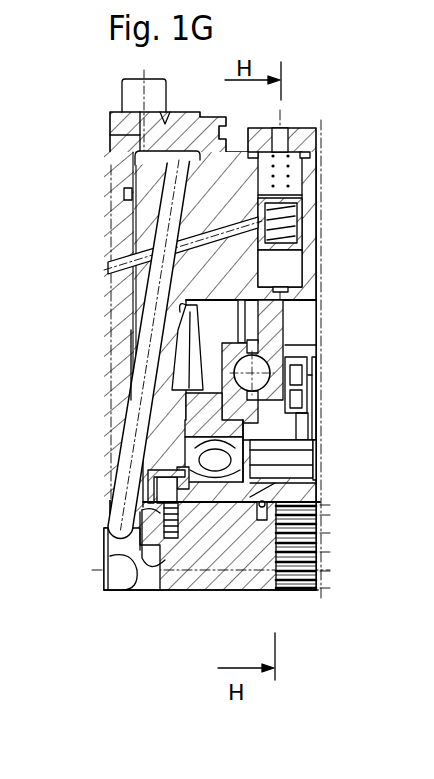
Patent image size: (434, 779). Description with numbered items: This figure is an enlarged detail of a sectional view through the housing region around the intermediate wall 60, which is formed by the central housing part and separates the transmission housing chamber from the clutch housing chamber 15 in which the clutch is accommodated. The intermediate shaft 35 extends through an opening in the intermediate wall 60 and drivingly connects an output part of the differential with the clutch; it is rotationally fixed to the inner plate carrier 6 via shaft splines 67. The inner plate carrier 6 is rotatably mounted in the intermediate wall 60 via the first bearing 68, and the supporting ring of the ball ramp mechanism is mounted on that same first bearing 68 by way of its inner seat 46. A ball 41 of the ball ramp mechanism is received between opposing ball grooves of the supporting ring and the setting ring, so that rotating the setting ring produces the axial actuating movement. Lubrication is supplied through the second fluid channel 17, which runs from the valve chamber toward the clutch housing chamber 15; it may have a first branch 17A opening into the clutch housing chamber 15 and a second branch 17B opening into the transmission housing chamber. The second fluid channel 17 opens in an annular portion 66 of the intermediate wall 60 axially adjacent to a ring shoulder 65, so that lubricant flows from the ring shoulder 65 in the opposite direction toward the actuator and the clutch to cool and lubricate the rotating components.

The inner plate carrier 6 is at (308, 488).
The clutch housing chamber 15 is at (152, 570).
The second fluid channel 17 is at (148, 231).
The first branch 17A is at (136, 398).
The second branch 17B is at (146, 272).
The intermediate shaft 35 is at (190, 570).
The ball 41 is at (280, 357).
The inner seat 46 is at (182, 419).
The intermediate wall 60 is at (133, 345).
The ring shoulder 65 is at (116, 566).
The annular portion 66 is at (152, 560).
The shaft splines 67 is at (196, 552).
The first bearing 68 is at (212, 487).